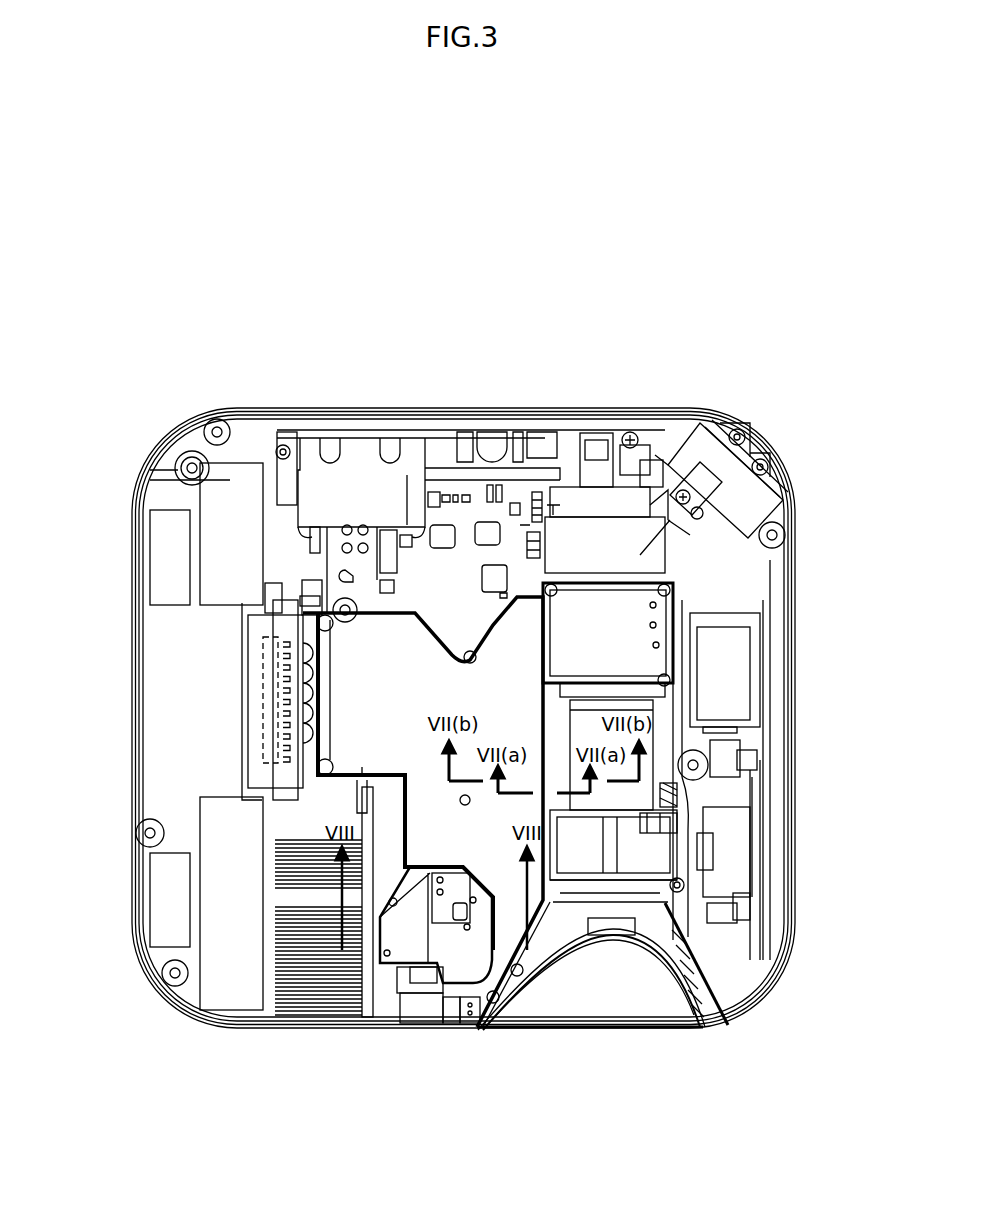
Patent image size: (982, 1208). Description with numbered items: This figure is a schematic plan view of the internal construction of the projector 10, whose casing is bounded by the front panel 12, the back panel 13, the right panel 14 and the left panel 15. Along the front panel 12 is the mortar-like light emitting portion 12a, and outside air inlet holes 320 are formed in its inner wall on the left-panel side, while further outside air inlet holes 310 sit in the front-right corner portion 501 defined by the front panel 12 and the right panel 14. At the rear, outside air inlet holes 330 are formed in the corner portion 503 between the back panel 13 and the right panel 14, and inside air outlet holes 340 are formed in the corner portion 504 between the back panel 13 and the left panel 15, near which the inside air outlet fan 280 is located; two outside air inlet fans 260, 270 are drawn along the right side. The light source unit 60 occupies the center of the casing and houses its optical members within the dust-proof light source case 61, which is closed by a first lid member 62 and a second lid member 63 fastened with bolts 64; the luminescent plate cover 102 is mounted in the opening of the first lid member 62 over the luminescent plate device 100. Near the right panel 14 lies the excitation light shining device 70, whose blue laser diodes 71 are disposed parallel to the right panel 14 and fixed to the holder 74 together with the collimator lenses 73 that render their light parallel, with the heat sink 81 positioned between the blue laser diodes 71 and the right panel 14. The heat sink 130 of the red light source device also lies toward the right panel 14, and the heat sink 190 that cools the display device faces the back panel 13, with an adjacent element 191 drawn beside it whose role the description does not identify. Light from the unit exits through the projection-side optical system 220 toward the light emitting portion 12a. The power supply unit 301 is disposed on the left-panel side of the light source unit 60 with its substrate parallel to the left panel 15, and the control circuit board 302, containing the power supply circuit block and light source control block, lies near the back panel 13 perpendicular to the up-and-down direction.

The projector 10 is at (208, 294).
The front panel 12 is at (463, 1028).
The light emitting portion 12a is at (613, 1010).
The back panel 13 is at (318, 408).
The right panel 14 is at (138, 742).
The left panel 15 is at (793, 703).
The light source unit 60 is at (188, 784).
The light source case 61 is at (522, 622).
The first lid member 62 is at (488, 617).
The second lid member 63 is at (636, 598).
The bolts 64 is at (378, 445).
The excitation light shining device 70 is at (233, 775).
The blue laser diodes 71 is at (280, 698).
The collimator lenses 73 is at (316, 722).
The holder 74 is at (267, 730).
The heat sink 81 is at (228, 680).
The luminescent plate device 100 is at (407, 947).
The luminescent plate cover 102 is at (437, 950).
The heat sink 130 is at (319, 1018).
The heat sink 190 is at (588, 530).
The power connector 191 is at (613, 532).
The projection-side optical system 220 is at (662, 779).
The outside air inlet fan 260 is at (157, 916).
The outside air inlet fan 270 is at (155, 543).
The inside air outlet fan 280 is at (702, 433).
The power supply unit 301 is at (765, 677).
The control circuit board 302 is at (443, 457).
The outside air inlet holes 310 is at (202, 1023).
The outside air inlet holes 320 is at (699, 1004).
The outside air inlet holes 330 is at (171, 425).
The inside air outlet holes 340 is at (754, 423).
The front-right corner portion 501 is at (178, 1024).
The corner portion 503 is at (134, 413).
The corner portion 504 is at (786, 412).